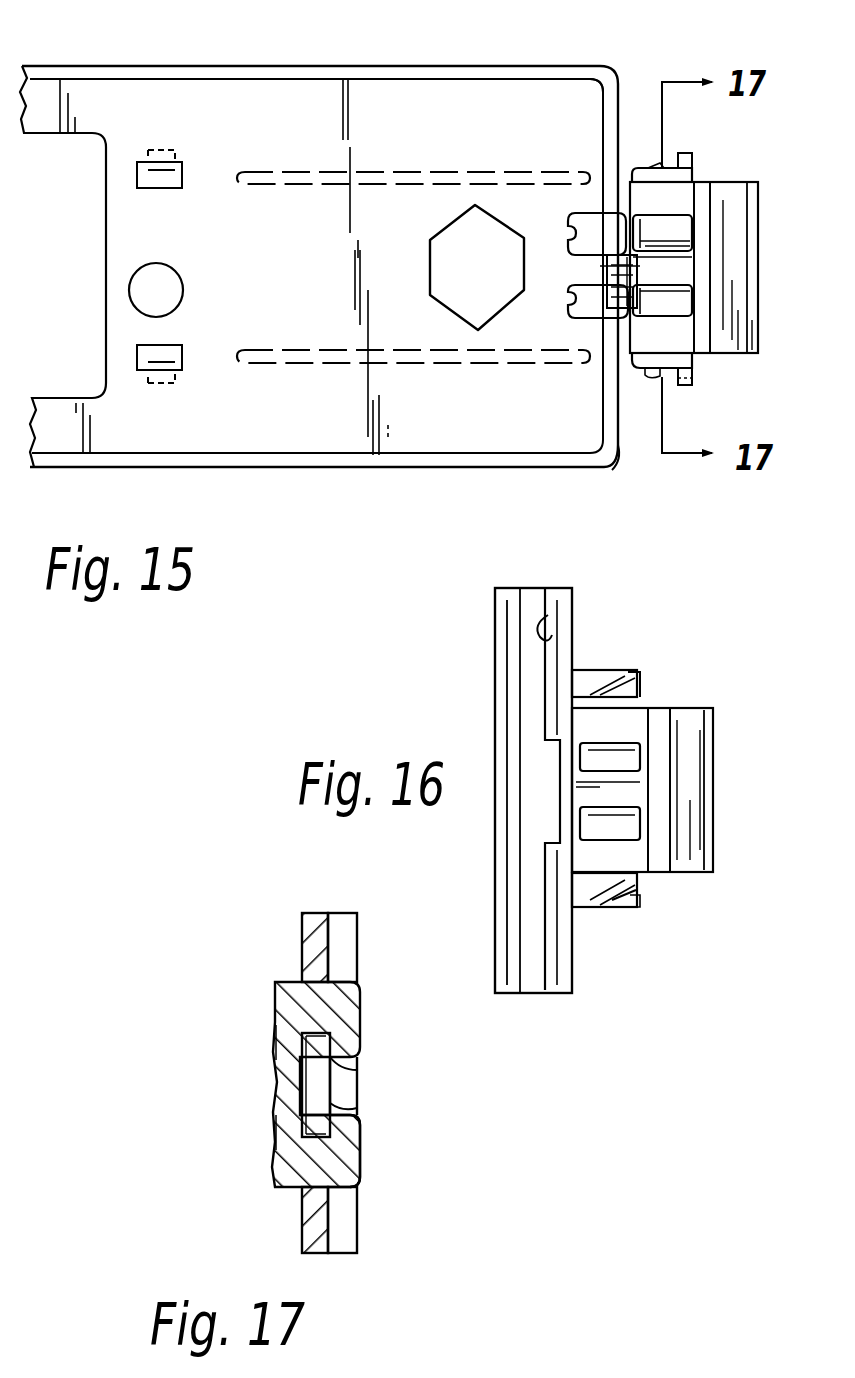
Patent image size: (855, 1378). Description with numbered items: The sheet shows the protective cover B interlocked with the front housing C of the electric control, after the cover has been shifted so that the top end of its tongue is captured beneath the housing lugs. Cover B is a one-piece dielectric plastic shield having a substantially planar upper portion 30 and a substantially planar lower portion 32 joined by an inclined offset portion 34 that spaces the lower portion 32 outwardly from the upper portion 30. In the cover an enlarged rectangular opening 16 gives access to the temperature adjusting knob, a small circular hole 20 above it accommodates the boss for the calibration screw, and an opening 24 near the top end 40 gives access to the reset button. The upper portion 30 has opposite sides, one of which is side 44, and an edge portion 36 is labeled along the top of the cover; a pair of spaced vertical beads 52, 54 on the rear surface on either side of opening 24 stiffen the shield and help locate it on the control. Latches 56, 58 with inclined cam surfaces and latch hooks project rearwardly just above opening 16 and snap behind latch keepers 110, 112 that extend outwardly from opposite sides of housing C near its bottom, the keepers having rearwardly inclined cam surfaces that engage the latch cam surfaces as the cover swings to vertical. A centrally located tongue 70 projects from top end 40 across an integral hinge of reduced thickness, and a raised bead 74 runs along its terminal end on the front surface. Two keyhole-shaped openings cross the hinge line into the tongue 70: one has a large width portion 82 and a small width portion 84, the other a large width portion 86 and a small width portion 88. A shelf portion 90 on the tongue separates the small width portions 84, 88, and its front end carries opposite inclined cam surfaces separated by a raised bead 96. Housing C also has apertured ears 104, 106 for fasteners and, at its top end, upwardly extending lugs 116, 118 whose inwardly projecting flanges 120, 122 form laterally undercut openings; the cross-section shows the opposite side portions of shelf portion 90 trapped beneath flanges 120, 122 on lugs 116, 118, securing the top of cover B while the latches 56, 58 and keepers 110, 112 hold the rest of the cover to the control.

In FIG. 15, the rectangular opening 16 is at (103, 160).
In FIG. 15, the circular hole 20 is at (170, 276).
In FIG. 15, the opening 24 is at (442, 240).
In FIG. 16, the upper portion 30 is at (542, 622).
In FIG. 16, the lower portion 32 is at (495, 700).
In FIG. 16, the inclined offset portion 34 is at (535, 595).
In FIG. 15, the top edge 36 is at (148, 78).
In FIG. 15, the top end 40 is at (622, 458).
In FIG. 15, the side 44 is at (430, 65).
In FIG. 15, the vertical bead 52 is at (263, 166).
In FIG. 15, the vertical bead 54 is at (255, 347).
In FIG. 15, the latch 56 is at (160, 176).
In FIG. 16, the latch 56 is at (616, 682).
In FIG. 15, the latch 58 is at (165, 362).
In FIG. 16, the latch 58 is at (617, 905).
In FIG. 15, the tongue 70 is at (730, 205).
In FIG. 16, the tongue 70 is at (690, 727).
In FIG. 17, the tongue 70 is at (322, 914).
In FIG. 15, the raised bead 74 is at (760, 222).
In FIG. 16, the raised bead 74 is at (708, 740).
In FIG. 17, the raised bead 74 is at (360, 962).
In FIG. 15, the large width portion 82 is at (570, 228).
In FIG. 17, the small width portion 84 is at (286, 1026).
In FIG. 15, the large width portion 86 is at (583, 305).
In FIG. 17, the small width portion 88 is at (286, 1142).
In FIG. 15, the shelf portion 90 is at (626, 278).
In FIG. 17, the shelf portion 90 is at (316, 1076).
In FIG. 15, the raised bead 96 is at (620, 267).
In FIG. 16, the raised bead 96 is at (588, 783).
In FIG. 15, the apertured ear 104 is at (686, 153).
In FIG. 15, the apertured ear 106 is at (690, 383).
In FIG. 15, the latch keeper 110 is at (652, 163).
In FIG. 16, the latch keeper 110 is at (593, 688).
In FIG. 15, the latch keeper 112 is at (655, 378).
In FIG. 16, the latch keeper 112 is at (607, 905).
In FIG. 15, the lug 116 is at (668, 236).
In FIG. 16, the lug 116 is at (622, 762).
In FIG. 17, the lug 116 is at (362, 1012).
In FIG. 15, the lug 118 is at (690, 310).
In FIG. 16, the lug 118 is at (620, 825).
In FIG. 17, the lug 118 is at (362, 1152).
In FIG. 17, the flange 120 is at (345, 1073).
In FIG. 17, the flange 122 is at (358, 1105).
In FIG. 15, the protective cover B is at (303, 62).
In FIG. 16, the protective cover B is at (493, 631).
In FIG. 17, the front housing C is at (288, 978).